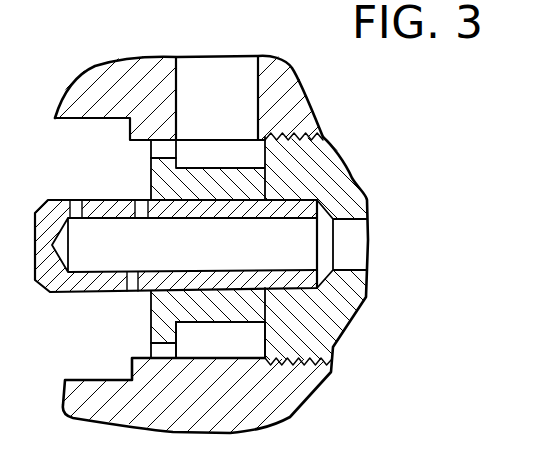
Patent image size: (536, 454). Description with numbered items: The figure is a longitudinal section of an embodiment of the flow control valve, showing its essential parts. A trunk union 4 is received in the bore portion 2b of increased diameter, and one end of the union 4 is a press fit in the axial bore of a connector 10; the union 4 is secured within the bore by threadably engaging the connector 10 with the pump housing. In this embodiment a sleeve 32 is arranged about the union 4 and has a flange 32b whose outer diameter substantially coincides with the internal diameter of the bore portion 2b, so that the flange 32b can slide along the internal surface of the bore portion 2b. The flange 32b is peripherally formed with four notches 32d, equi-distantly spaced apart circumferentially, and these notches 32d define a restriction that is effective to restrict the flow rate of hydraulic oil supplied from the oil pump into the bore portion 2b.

The connector 10 is at (310, 180).
The sleeve 32 is at (240, 322).
The notches 32d is at (163, 152).
The flange 32b is at (195, 330).
The bore portion 2b is at (253, 348).
The trunk union 4 is at (103, 292).